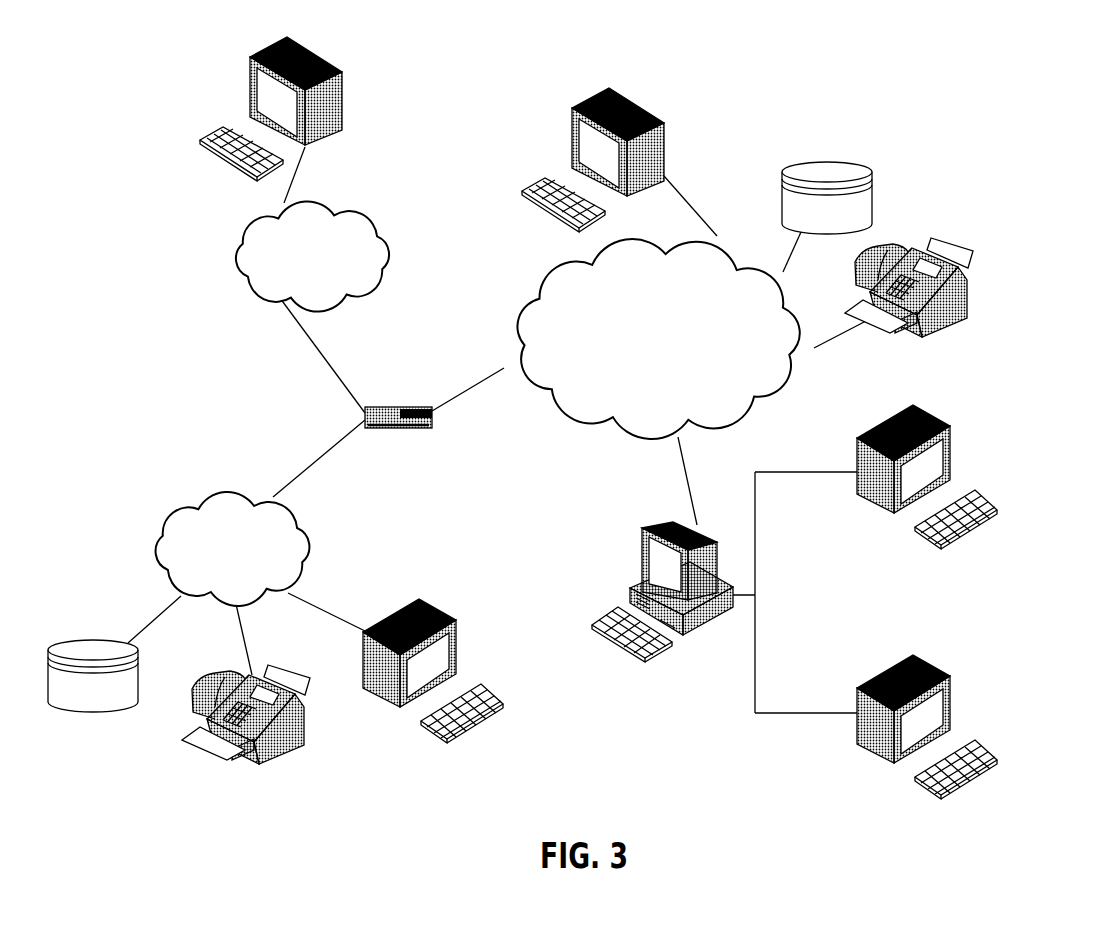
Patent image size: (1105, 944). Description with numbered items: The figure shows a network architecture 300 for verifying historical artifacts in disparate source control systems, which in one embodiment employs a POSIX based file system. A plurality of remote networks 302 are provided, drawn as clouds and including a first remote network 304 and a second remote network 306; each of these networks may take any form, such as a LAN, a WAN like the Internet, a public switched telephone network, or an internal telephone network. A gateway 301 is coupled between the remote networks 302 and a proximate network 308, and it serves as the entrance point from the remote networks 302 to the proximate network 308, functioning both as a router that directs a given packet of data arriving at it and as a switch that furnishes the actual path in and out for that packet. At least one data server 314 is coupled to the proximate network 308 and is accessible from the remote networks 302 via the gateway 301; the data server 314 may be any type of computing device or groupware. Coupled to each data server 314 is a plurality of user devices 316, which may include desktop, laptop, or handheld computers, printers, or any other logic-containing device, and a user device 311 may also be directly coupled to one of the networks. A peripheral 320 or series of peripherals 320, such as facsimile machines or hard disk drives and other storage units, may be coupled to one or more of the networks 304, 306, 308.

The network architecture 300 is at (993, 80).
The gateway 301 is at (398, 407).
The remote networks 302 is at (212, 338).
The first remote network 304 is at (152, 523).
The second remote network 306 is at (398, 263).
The proximate network 308 is at (780, 397).
The user device 311 is at (668, 150).
The data server 314 is at (642, 550).
The user devices 316 is at (345, 100).
The peripheral 320 is at (828, 162).